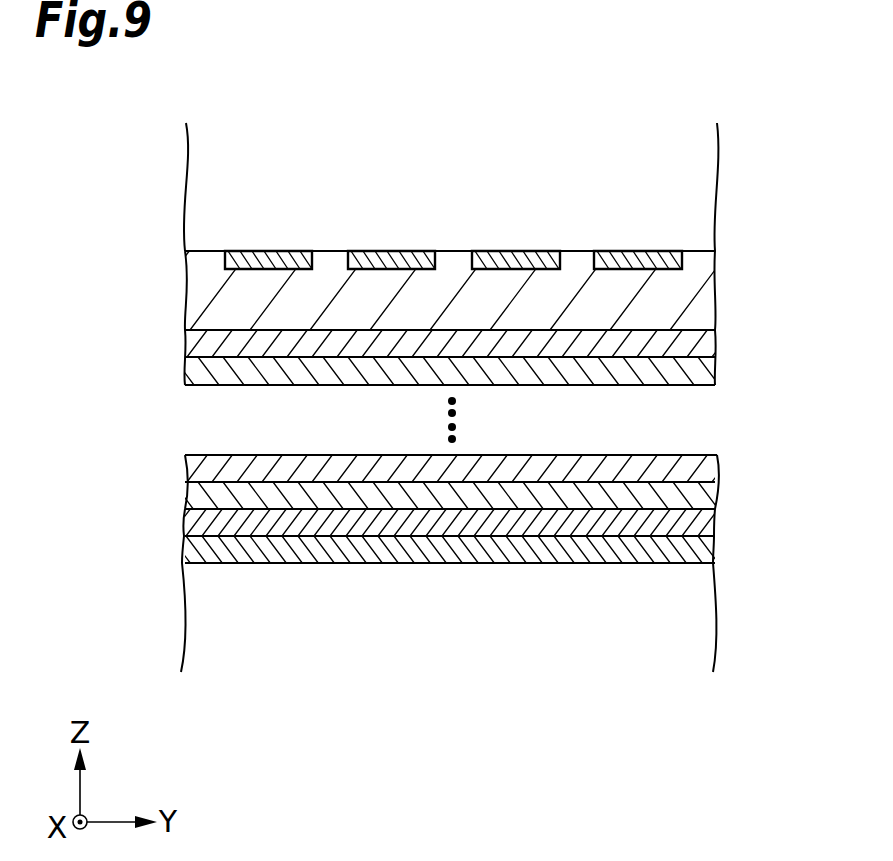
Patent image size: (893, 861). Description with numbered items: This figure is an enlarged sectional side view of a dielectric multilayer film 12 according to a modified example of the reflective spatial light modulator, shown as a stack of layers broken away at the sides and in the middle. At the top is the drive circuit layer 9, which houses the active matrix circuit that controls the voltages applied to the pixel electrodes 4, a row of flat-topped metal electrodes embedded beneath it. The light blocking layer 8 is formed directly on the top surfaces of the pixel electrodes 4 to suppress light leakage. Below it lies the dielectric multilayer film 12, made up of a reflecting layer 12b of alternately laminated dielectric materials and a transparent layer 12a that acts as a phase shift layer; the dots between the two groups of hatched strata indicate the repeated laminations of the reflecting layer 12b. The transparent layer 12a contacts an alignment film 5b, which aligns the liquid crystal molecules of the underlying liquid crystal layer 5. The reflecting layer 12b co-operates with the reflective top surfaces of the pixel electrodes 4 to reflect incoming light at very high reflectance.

The pixel electrode 4 is at (663, 262).
The liquid crystal layer 5 is at (697, 616).
The alignment film 5b is at (700, 548).
The light blocking layer 8 is at (707, 297).
The drive circuit layer 9 is at (707, 185).
The dielectric multilayer film 12 is at (817, 406).
The transparent layer 12a is at (713, 518).
The reflecting layer 12b is at (743, 333).